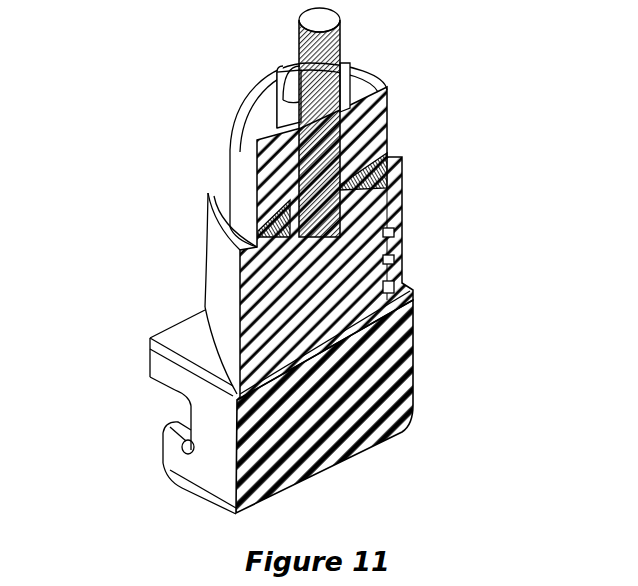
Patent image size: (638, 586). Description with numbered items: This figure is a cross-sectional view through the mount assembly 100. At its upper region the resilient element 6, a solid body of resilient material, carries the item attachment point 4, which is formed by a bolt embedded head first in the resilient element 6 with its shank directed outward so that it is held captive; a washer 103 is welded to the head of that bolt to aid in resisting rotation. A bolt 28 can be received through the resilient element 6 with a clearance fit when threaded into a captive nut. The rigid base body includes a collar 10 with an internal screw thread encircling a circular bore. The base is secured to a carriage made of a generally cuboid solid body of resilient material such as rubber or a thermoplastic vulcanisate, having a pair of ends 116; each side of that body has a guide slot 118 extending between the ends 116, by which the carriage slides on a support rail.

The mount assembly 100 is at (292, 258).
The item attachment point 4 is at (343, 46).
The bolt 28 is at (290, 67).
The resilient element 6 is at (317, 231).
The collar 10 is at (405, 230).
The washer 103 is at (257, 205).
The guide slot 118 is at (173, 410).
The end 116 is at (203, 467).